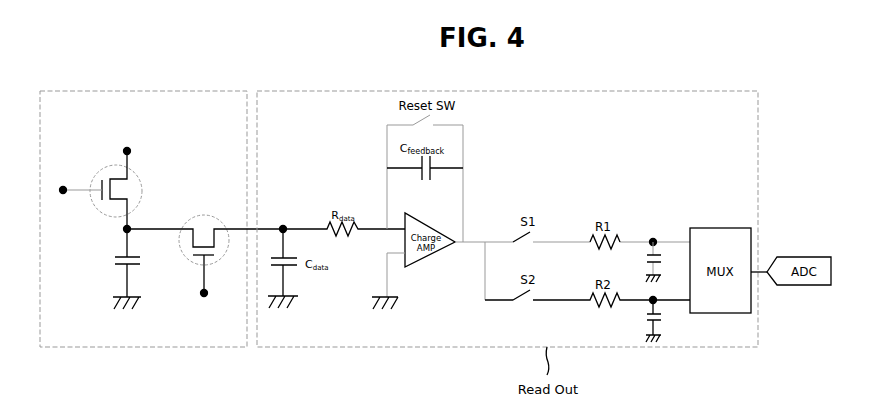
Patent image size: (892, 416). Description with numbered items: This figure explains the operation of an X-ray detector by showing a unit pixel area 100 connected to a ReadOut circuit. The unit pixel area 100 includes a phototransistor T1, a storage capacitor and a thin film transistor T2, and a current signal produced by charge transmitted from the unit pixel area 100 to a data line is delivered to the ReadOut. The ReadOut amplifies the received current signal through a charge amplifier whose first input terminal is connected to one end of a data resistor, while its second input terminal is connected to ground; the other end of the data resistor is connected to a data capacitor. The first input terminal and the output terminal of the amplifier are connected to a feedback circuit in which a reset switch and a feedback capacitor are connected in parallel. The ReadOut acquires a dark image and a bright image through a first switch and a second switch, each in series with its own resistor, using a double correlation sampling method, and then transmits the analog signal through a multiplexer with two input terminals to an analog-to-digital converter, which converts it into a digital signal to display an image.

The unit pixel area 100 is at (143, 347).
The phototransistor T1 is at (139, 172).
The thin film transistor T2 is at (214, 215).